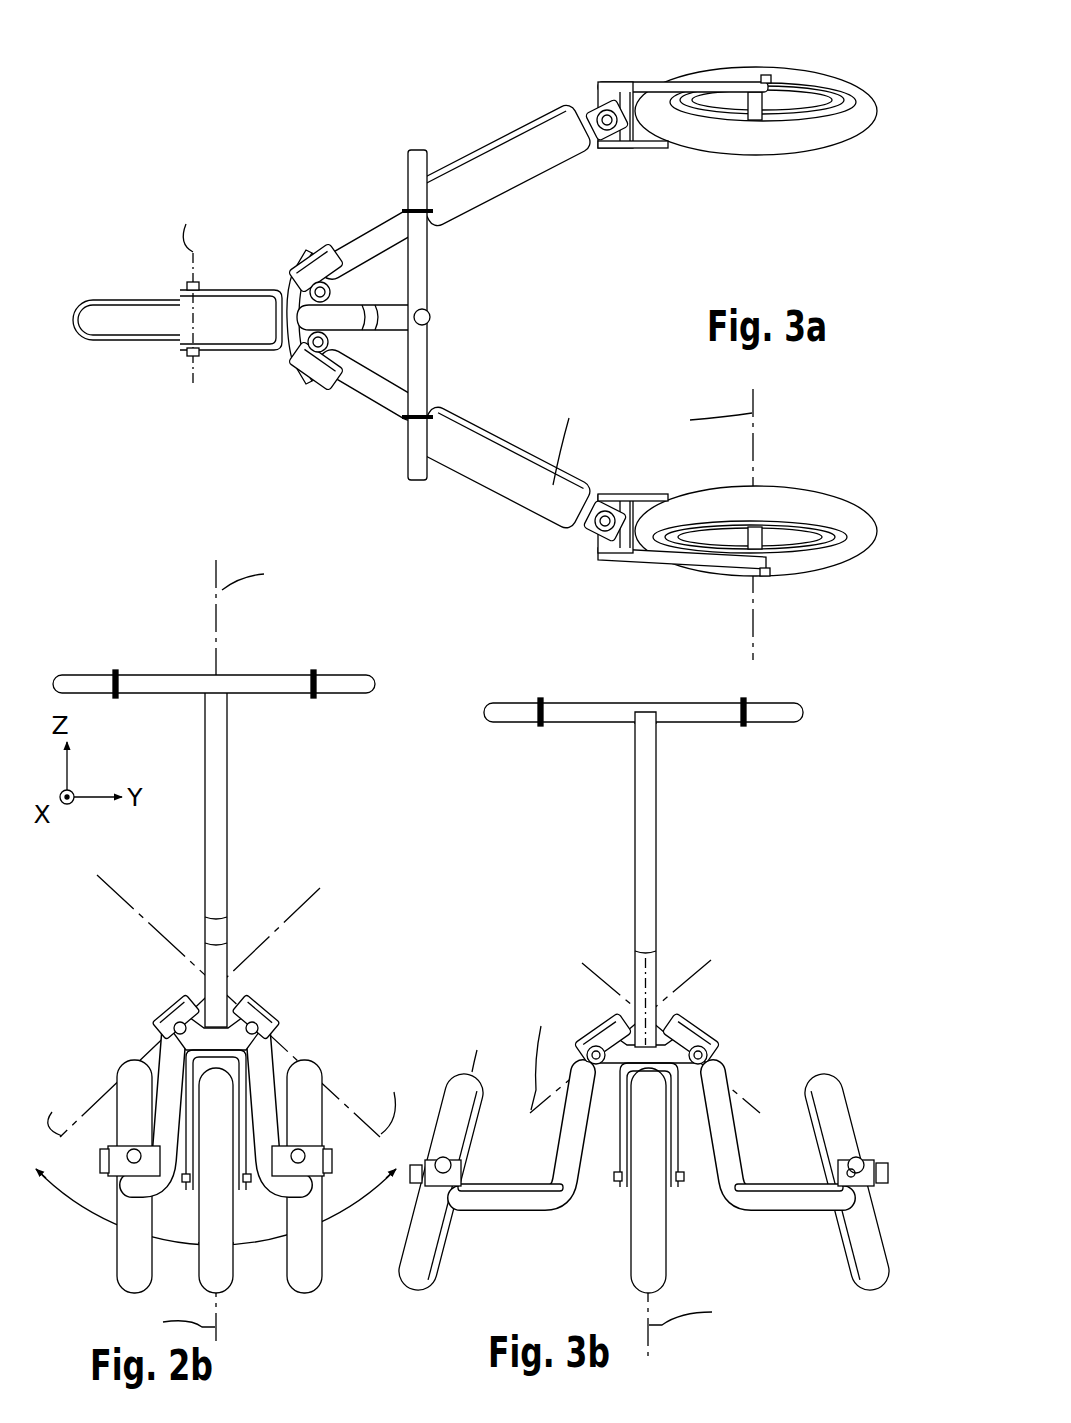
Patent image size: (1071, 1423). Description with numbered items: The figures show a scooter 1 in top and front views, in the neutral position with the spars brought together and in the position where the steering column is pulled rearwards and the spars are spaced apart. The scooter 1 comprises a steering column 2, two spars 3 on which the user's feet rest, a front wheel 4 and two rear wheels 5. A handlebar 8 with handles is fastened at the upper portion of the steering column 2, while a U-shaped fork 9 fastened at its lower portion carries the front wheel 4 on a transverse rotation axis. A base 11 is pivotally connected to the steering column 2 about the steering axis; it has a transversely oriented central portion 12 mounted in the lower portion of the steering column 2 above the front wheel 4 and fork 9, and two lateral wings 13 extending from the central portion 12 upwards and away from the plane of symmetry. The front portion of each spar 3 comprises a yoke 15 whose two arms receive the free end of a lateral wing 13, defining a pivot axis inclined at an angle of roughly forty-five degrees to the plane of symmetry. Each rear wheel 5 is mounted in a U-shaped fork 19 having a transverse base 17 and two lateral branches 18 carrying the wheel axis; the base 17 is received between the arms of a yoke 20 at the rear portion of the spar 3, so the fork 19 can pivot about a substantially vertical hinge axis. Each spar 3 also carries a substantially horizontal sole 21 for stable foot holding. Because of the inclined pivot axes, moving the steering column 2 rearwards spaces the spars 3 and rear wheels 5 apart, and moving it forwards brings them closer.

In FIG. 3A, the scooter 1 is at (479, 332).
In FIG. 2B, the scooter 1 is at (221, 944).
In FIG. 3B, the scooter 1 is at (654, 1000).
In FIG. 3A, the steering column 2 is at (386, 340).
In FIG. 2B, the steering column 2 is at (214, 792).
In FIG. 3B, the steering column 2 is at (642, 827).
In FIG. 3A, the spar 3 is at (574, 93).
In FIG. 2B, the spar 3 is at (172, 1097).
In FIG. 3B, the spar 3 is at (731, 1097).
In FIG. 3A, the front wheel 4 is at (125, 320).
In FIG. 2B, the front wheel 4 is at (228, 1272).
In FIG. 3B, the front wheel 4 is at (641, 1248).
In FIG. 3A, the rear wheel 5 is at (862, 128).
In FIG. 2B, the rear wheel 5 is at (128, 1282).
In FIG. 3B, the rear wheel 5 is at (415, 1268).
In FIG. 3A, the handlebar 8 is at (424, 295).
In FIG. 2B, the handlebar 8 is at (177, 678).
In FIG. 3B, the handlebar 8 is at (604, 712).
In FIG. 3A, the fork 9 is at (229, 290).
In FIG. 2B, the fork 9 is at (246, 1120).
In FIG. 3B, the fork 9 is at (681, 1150).
In FIG. 3A, the base 11 is at (274, 371).
In FIG. 2B, the base 11 is at (274, 1006).
In FIG. 3B, the base 11 is at (666, 1034).
In FIG. 3A, the central portion 12 is at (233, 352).
In FIG. 3A, the lateral wing 13 is at (286, 362).
In FIG. 3A, the yoke 15 is at (312, 385).
In FIG. 2B, the yoke 15 is at (160, 1027).
In FIG. 3B, the yoke 15 is at (706, 1046).
In FIG. 3A, the base 17 is at (612, 102).
In FIG. 2B, the base 17 is at (94, 1168).
In FIG. 3B, the base 17 is at (858, 1162).
In FIG. 3A, the lateral branch 18 is at (727, 80).
In FIG. 3A, the fork 19 is at (650, 152).
In FIG. 3B, the fork 19 is at (880, 1160).
In FIG. 2B, the yoke 20 is at (325, 1162).
In FIG. 3B, the yoke 20 is at (836, 1165).
In FIG. 3A, the sole 21 is at (490, 186).
In FIG. 3B, the sole 21 is at (499, 1186).